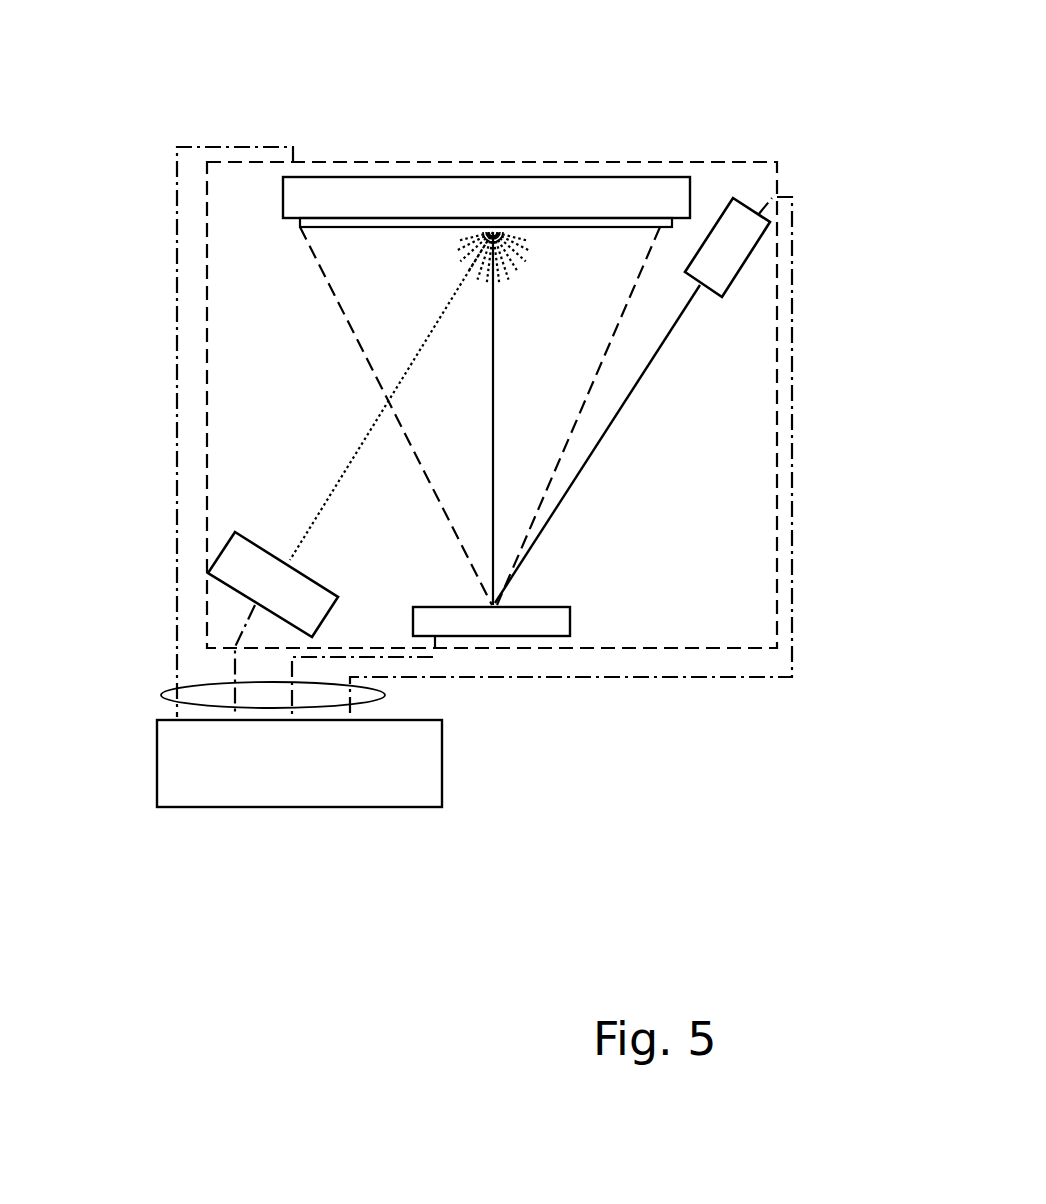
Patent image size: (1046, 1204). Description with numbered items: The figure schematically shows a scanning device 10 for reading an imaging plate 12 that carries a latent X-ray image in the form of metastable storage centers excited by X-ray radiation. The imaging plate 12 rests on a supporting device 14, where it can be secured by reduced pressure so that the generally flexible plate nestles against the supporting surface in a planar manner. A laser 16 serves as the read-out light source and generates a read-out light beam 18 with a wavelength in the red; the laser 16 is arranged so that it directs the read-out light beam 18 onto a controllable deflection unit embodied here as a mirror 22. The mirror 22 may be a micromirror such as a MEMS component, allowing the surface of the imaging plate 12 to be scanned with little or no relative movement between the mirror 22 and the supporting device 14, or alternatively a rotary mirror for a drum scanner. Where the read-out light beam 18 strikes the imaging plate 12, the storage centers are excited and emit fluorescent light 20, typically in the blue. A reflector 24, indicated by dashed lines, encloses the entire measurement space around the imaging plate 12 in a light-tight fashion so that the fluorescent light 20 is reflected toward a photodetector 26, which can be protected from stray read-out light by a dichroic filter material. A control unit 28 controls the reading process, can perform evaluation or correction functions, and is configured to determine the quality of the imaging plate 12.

The scanning device 10 is at (198, 98).
The imaging plate 12 is at (550, 222).
The supporting device 14 is at (470, 177).
The laser 16 is at (733, 197).
The read-out light beam 18 is at (677, 325).
The fluorescent light 20 is at (457, 233).
The mirror 22 is at (513, 636).
The reflector 24 is at (743, 161).
The photodetector 26 is at (228, 545).
The control unit 28 is at (232, 808).